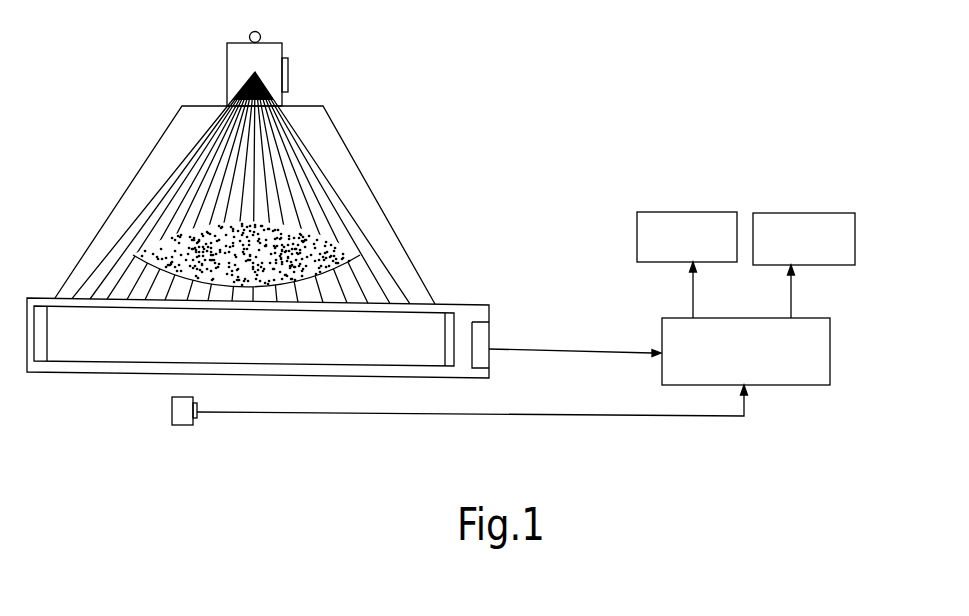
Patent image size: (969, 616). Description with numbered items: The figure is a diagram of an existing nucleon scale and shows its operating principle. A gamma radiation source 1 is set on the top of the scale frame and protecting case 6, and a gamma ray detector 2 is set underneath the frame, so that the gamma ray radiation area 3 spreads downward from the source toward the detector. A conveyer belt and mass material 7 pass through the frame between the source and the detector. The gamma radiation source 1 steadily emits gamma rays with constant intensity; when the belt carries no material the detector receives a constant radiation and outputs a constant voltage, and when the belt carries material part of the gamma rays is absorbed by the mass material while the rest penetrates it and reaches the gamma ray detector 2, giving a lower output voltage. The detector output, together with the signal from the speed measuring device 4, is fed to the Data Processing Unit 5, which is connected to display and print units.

The gamma radiation source 1 is at (262, 57).
The gamma ray detector 2 is at (383, 345).
The gamma ray radiation area 3 is at (195, 163).
The speed measuring device 4 is at (171, 408).
The Data Processing Unit (DPU) 5 is at (823, 368).
The scale frame and protecting case 6 is at (343, 138).
The conveyer belt and mass material 7 is at (307, 242).